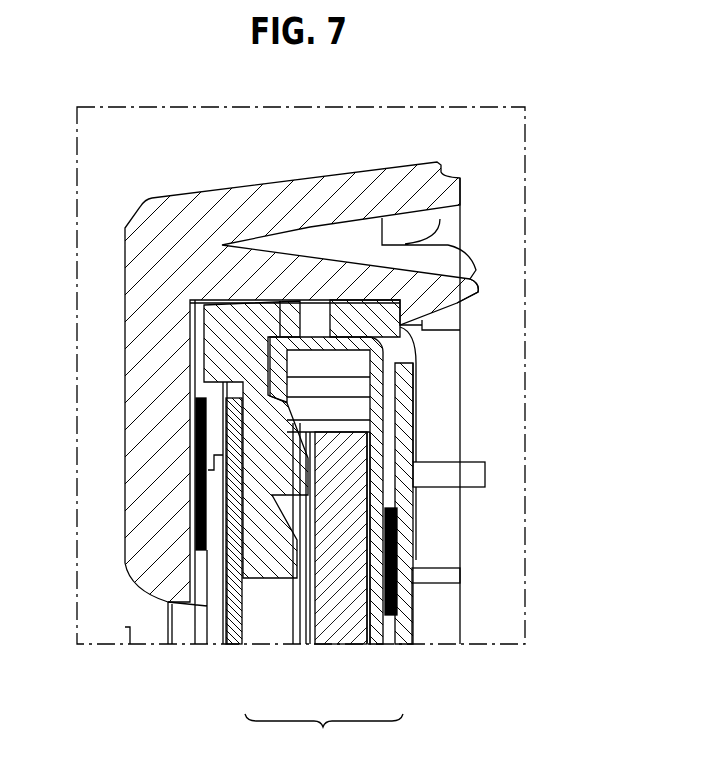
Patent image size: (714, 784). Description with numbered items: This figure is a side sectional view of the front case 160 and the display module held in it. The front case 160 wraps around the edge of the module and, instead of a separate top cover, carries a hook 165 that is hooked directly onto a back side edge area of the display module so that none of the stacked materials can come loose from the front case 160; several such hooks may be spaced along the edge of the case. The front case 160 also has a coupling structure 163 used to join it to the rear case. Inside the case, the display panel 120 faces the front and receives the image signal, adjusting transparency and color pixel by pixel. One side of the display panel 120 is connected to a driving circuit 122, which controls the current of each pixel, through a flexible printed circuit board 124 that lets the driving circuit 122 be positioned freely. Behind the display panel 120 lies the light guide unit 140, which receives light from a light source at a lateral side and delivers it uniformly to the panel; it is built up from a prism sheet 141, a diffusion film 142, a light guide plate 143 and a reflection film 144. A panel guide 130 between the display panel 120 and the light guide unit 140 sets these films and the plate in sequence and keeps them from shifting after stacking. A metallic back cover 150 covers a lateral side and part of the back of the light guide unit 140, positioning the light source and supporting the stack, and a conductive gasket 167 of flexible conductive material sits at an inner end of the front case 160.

The front case 160 is at (324, 192).
The coupling structure 163 is at (450, 260).
The hook 165 is at (452, 315).
The flexible printed circuit board 124 is at (418, 353).
The back cover 150 is at (379, 428).
The driving circuit 122 is at (404, 550).
The conductive gasket 167 is at (200, 452).
The panel guide 130 is at (260, 495).
The display panel 120 is at (233, 548).
The light guide unit 140 is at (324, 735).
The prism sheet 141 is at (303, 642).
The diffusion film 142 is at (310, 642).
The light guide plate 143 is at (340, 642).
The reflection film 144 is at (368, 642).